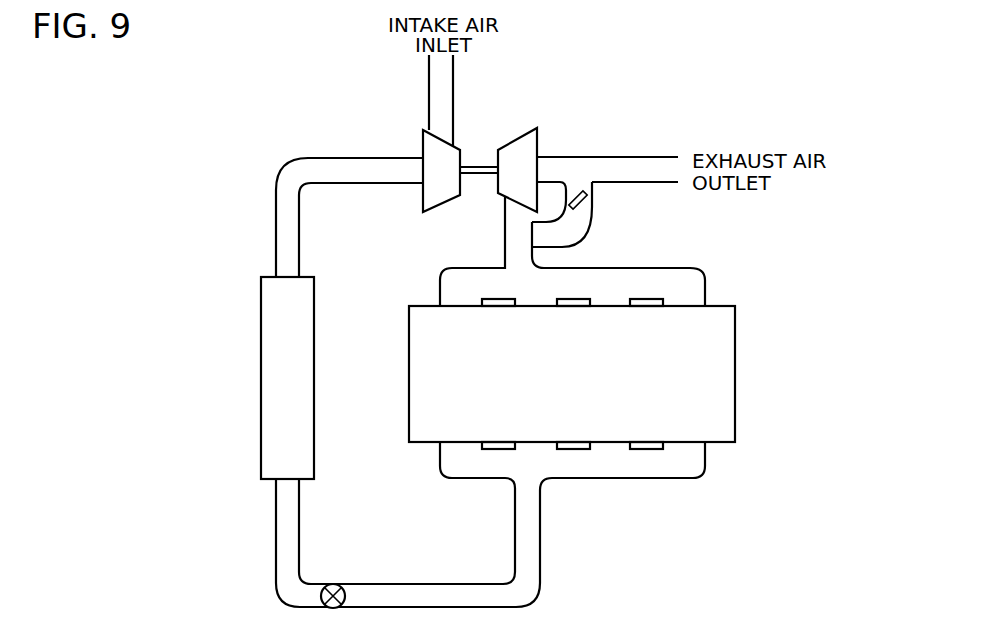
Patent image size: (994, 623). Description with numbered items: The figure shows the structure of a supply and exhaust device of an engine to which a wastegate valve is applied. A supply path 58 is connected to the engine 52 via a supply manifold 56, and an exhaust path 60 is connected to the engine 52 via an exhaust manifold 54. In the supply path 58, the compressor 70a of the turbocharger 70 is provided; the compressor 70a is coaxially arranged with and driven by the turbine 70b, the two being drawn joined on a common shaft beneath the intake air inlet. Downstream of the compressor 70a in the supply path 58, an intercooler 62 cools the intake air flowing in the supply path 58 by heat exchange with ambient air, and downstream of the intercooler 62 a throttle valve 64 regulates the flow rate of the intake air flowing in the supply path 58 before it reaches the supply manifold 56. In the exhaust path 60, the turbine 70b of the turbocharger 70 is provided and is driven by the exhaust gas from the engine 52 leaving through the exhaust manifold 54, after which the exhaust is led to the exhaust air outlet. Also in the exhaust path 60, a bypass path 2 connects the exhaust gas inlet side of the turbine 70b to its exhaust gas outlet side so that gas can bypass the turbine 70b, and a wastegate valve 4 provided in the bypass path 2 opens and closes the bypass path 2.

The bypass path 2 is at (587, 222).
The wastegate valve 4 is at (590, 201).
The engine 52 is at (720, 422).
The exhaust manifold 54 is at (682, 278).
The supply manifold 56 is at (582, 465).
The supply path 58 is at (290, 498).
The exhaust path 60 is at (612, 157).
The intercooler 62 is at (260, 347).
The throttle valve 64 is at (335, 586).
The turbocharger 70 is at (484, 114).
The compressor 70a is at (423, 140).
The turbine 70b is at (537, 128).